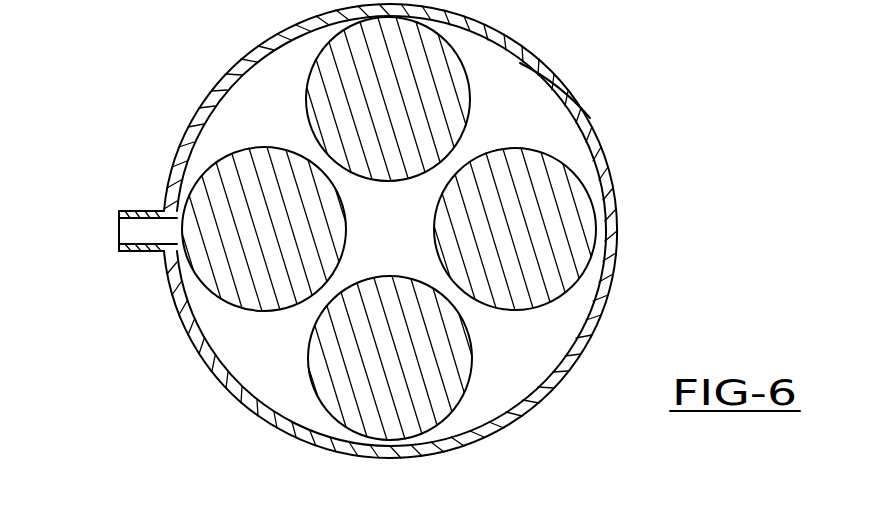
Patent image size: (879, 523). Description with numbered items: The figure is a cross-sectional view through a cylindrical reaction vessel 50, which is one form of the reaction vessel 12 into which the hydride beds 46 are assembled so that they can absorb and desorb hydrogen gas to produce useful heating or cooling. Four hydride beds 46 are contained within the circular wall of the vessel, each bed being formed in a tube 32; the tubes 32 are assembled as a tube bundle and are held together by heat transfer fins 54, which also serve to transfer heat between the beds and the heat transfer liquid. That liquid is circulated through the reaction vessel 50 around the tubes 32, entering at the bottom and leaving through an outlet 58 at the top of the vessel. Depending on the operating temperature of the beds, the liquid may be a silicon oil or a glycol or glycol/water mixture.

The reaction vessel 12 is at (626, 230).
The tubes 32 is at (203, 173).
The hydride beds 46 is at (387, 99).
The cylindrical reaction vessel 50 is at (573, 92).
The heat transfer fins 54 is at (558, 145).
The outlet 58 is at (145, 252).